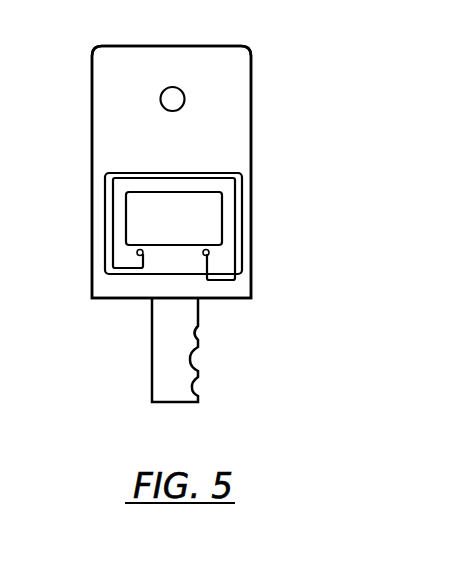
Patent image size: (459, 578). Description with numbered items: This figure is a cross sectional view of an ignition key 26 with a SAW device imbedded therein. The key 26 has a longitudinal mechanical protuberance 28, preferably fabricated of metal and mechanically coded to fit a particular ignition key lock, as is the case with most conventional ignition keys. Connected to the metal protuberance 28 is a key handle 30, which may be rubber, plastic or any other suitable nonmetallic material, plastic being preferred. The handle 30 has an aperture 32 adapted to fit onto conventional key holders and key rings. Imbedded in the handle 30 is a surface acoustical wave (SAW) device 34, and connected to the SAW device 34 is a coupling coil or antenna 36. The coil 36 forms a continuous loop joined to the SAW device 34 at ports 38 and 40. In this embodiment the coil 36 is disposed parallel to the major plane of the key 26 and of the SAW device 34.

The ignition key 26 is at (263, 77).
The longitudinal mechanical protuberance 28 is at (192, 365).
The key handle 30 is at (253, 125).
The aperture 32 is at (163, 90).
The surface acoustical wave (SAW) device 34 is at (185, 231).
The coupling coil 36 is at (103, 240).
The port 38 is at (144, 256).
The port 40 is at (209, 255).